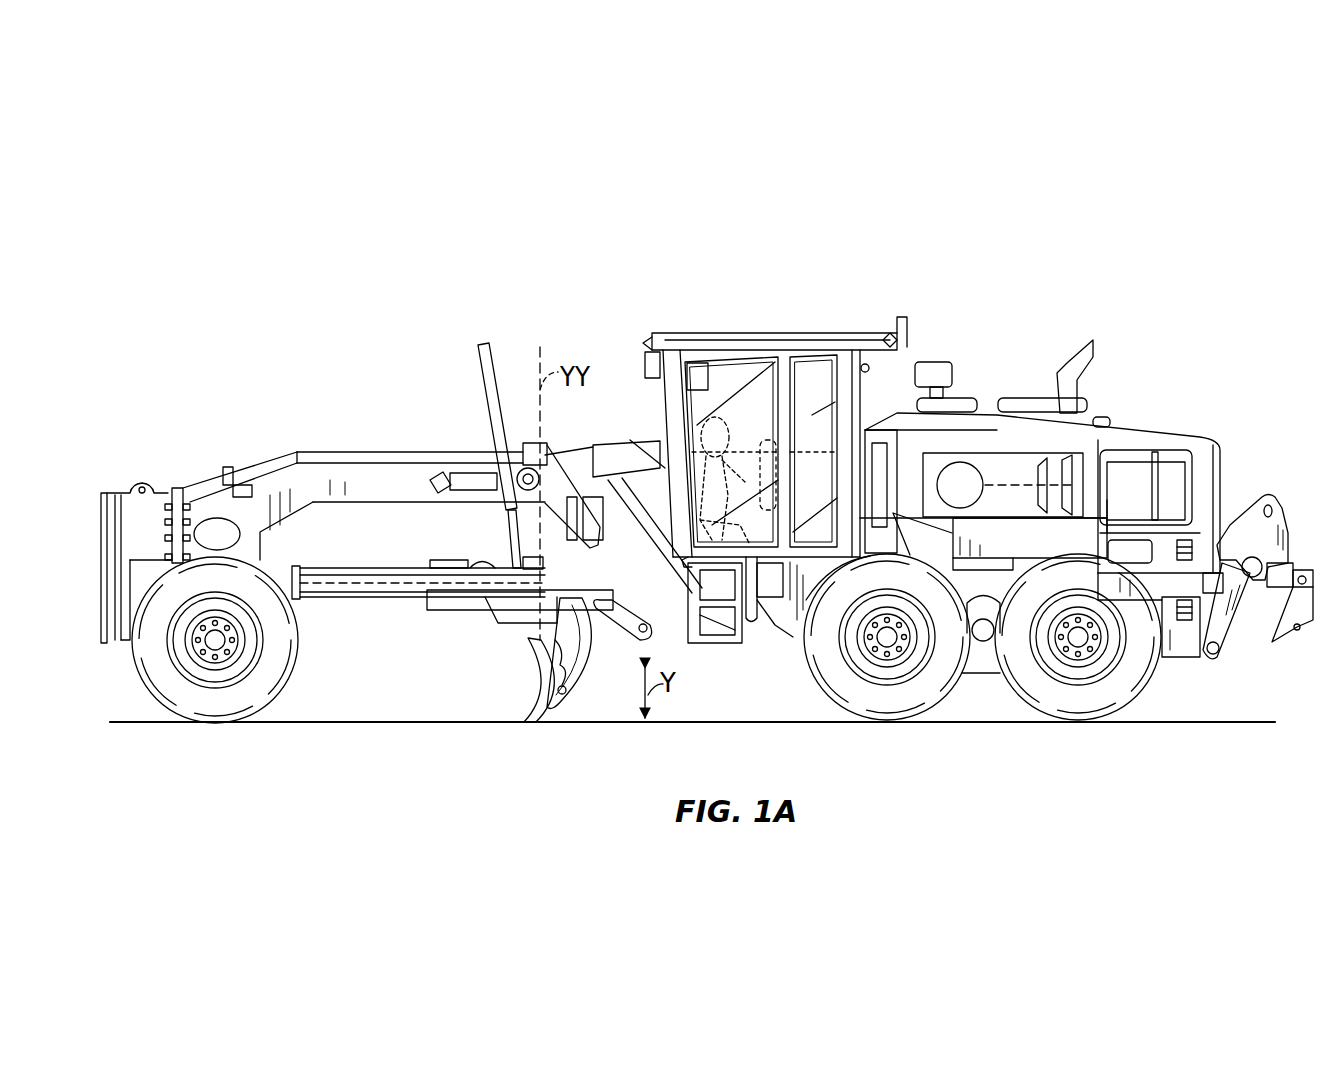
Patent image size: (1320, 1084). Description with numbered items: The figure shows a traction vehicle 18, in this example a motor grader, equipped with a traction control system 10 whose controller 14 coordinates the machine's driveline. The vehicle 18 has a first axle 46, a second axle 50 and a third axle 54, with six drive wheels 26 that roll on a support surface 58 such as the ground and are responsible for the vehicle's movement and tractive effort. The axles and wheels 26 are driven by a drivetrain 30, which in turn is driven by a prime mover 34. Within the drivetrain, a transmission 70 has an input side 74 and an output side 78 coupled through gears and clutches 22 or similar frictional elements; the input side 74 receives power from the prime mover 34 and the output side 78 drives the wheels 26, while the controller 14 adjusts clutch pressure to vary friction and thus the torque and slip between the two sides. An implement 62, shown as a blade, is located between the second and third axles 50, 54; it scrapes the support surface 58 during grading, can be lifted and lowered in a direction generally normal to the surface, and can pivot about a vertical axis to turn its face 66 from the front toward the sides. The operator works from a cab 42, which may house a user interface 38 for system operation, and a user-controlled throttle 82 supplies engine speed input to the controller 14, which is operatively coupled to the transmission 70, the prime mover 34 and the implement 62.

The traction control system 10 is at (735, 319).
The controller 14 is at (697, 376).
The traction vehicle 18 is at (372, 279).
The gears and clutches 22 is at (1013, 554).
The wheels 26 is at (671, 665).
The drivetrain 30 is at (1051, 426).
The prime mover 34 is at (973, 466).
The user interface 38 is at (698, 362).
The cab 42 is at (775, 445).
The first axle 46 is at (1080, 640).
The second axle 50 is at (887, 640).
The third axle 54 is at (222, 652).
The support surface 58 is at (1236, 722).
The implement 62 is at (557, 686).
The face 66 is at (521, 697).
The transmission 70 is at (1025, 426).
The input side 74 is at (1036, 455).
The output side 78 is at (1074, 457).
The user-controlled throttle 82 is at (742, 478).